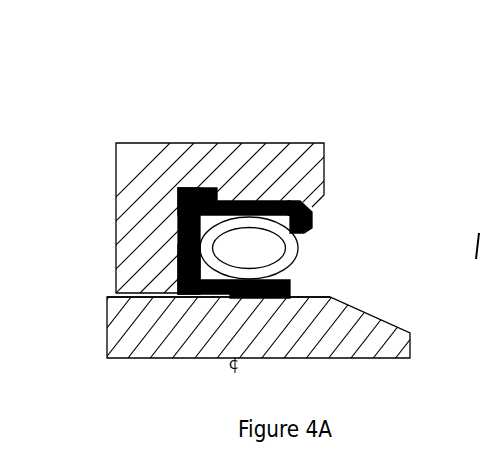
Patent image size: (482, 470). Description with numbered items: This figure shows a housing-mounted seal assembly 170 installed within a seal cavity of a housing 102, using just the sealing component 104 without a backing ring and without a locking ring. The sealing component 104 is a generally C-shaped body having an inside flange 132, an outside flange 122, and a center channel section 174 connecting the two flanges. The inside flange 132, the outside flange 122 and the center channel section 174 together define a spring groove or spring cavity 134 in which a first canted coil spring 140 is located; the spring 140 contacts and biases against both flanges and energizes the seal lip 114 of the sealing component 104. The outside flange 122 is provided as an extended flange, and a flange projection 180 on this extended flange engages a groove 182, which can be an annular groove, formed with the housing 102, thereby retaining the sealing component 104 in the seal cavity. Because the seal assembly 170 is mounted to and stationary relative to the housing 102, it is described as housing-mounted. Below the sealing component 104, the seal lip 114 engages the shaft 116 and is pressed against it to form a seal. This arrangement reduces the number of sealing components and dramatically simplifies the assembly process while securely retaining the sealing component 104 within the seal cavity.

The housing 102 is at (123, 143).
The sealing component 104 is at (178, 228).
The center channel section 174 is at (178, 250).
The flange projection 180 is at (190, 188).
The groove 182 is at (182, 188).
The outside flange 122 is at (242, 200).
The spring cavity 134 is at (262, 242).
The seal assembly 170 is at (323, 240).
The first canted coil spring 140 is at (295, 257).
The inside flange 132 is at (290, 290).
The seal lip 114 is at (270, 298).
The shaft 116 is at (383, 347).